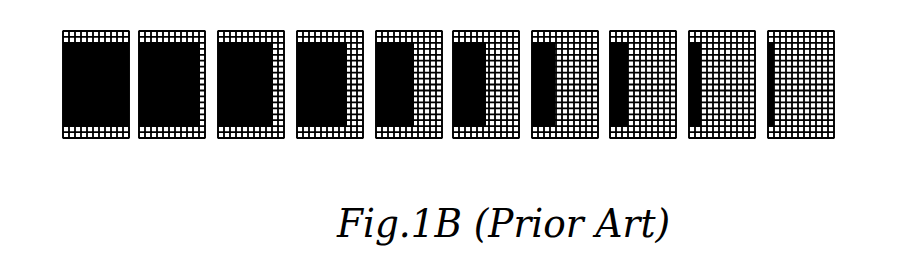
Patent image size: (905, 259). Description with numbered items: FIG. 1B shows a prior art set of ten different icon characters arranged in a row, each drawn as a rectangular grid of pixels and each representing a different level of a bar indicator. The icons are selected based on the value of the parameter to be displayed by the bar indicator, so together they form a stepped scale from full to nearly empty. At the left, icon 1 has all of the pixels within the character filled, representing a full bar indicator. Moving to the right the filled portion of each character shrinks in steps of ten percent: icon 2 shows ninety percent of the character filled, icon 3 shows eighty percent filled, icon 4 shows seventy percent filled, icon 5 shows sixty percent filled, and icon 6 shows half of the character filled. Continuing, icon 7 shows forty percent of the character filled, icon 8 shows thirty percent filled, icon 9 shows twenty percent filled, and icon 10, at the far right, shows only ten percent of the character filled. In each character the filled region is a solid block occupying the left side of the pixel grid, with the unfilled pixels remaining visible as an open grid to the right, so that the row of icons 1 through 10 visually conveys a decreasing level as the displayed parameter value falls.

The icon 1 is at (96, 98).
The icon 2 is at (172, 98).
The icon 3 is at (251, 98).
The icon 4 is at (330, 98).
The icon 5 is at (409, 98).
The icon 6 is at (486, 98).
The icon 7 is at (565, 98).
The icon 8 is at (643, 98).
The icon 9 is at (722, 98).
The icon 10 is at (801, 98).